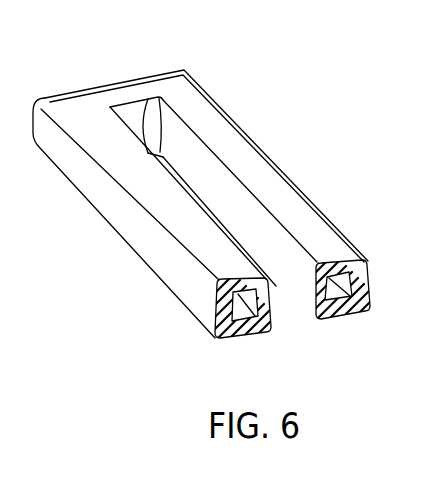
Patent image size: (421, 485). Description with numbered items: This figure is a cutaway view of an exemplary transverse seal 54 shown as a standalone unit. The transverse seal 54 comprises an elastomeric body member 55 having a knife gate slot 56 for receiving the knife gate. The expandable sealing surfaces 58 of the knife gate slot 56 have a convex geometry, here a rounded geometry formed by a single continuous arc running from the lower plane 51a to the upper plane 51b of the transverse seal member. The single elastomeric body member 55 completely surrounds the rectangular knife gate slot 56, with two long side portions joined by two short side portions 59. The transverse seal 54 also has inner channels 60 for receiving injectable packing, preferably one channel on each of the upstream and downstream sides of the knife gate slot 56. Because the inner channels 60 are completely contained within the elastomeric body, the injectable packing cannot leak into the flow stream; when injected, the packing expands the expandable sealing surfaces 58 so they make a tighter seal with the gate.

The lower plane 51a is at (340, 331).
The upper plane 51b is at (317, 228).
The transverse seal 54 is at (303, 153).
The elastomeric body member 55 is at (68, 163).
The knife gate slot 56 is at (172, 128).
The expandable sealing surfaces 58 is at (289, 275).
The short side portions 59 is at (130, 91).
The inner channels 60 is at (240, 322).